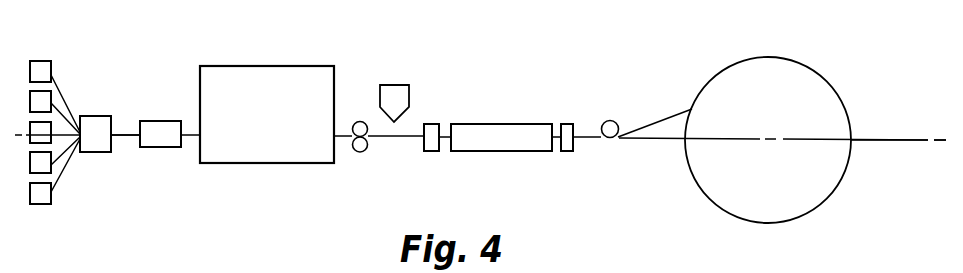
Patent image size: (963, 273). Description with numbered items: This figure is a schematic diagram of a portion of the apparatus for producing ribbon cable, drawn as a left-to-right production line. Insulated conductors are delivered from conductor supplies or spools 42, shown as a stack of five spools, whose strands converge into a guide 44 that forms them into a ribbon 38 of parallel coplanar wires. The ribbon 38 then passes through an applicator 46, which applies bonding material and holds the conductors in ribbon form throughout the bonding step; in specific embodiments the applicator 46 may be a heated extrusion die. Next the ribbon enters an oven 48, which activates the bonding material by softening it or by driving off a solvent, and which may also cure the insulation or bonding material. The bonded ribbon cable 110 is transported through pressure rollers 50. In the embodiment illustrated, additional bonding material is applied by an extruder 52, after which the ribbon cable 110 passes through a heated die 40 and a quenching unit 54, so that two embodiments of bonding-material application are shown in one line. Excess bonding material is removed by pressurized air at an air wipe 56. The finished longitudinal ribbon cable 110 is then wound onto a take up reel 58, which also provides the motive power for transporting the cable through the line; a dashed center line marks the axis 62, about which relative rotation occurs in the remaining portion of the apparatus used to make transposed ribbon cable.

The spools 42 is at (42, 70).
The guide 44 is at (100, 148).
The ribbon 38 is at (125, 132).
The applicator 46 is at (181, 94).
The oven 48 is at (287, 75).
The pressure rollers 50 is at (360, 121).
The extruder 52 is at (397, 87).
The heated die 40 is at (432, 122).
The quenching unit 54 is at (511, 150).
The air wipe 56 is at (569, 125).
The ribbon cable 110 is at (651, 124).
The take up reel 58 is at (780, 62).
The axis 62 is at (900, 140).